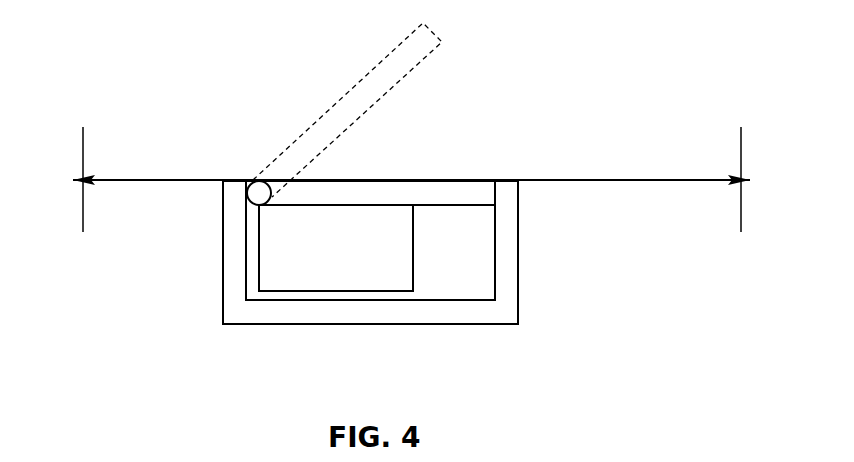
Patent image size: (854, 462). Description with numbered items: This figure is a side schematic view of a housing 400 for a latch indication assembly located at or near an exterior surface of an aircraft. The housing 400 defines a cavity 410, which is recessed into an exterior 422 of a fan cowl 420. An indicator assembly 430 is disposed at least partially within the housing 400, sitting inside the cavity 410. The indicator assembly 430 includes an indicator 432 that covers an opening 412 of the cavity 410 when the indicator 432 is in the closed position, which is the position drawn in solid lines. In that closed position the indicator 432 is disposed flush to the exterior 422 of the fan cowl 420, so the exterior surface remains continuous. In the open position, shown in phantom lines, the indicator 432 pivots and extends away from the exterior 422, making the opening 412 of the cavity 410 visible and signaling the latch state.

The housing 400 is at (249, 325).
The cavity 410 is at (443, 232).
The opening 412 is at (480, 179).
The fan cowl 420 is at (677, 162).
The exterior 422 is at (602, 180).
The indicator assembly 430 is at (339, 254).
The indicator 432 is at (478, 207).